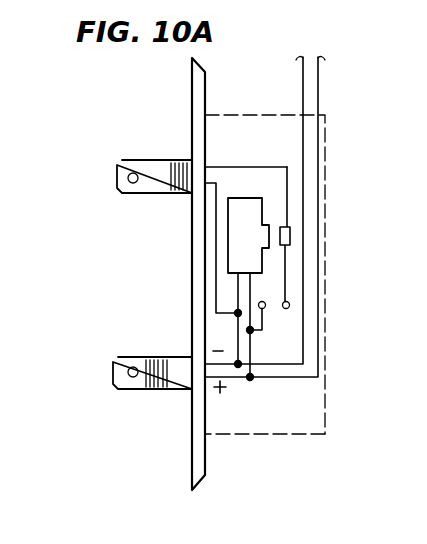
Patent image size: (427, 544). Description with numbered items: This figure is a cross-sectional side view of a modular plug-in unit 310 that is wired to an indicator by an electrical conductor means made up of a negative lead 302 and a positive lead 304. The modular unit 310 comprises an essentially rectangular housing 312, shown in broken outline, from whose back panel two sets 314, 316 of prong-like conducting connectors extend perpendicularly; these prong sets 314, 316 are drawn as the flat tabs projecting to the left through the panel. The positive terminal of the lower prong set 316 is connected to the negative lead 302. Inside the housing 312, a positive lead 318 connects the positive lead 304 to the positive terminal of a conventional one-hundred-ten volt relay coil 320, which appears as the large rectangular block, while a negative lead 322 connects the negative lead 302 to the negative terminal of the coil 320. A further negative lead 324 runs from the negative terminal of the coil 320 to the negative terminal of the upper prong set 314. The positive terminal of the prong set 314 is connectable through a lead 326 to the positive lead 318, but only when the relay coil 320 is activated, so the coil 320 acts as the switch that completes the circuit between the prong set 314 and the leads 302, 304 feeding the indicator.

The negative lead 302 is at (300, 71).
The positive lead 304 is at (321, 71).
The modular unit 310 is at (343, 128).
The housing 312 is at (323, 410).
The prong set 314 is at (111, 184).
The prong set 316 is at (111, 383).
The positive lead 318 is at (250, 350).
The relay coil 320 is at (238, 198).
The negative lead 322 is at (236, 322).
The negative lead 324 is at (216, 248).
The lead 326 is at (273, 167).